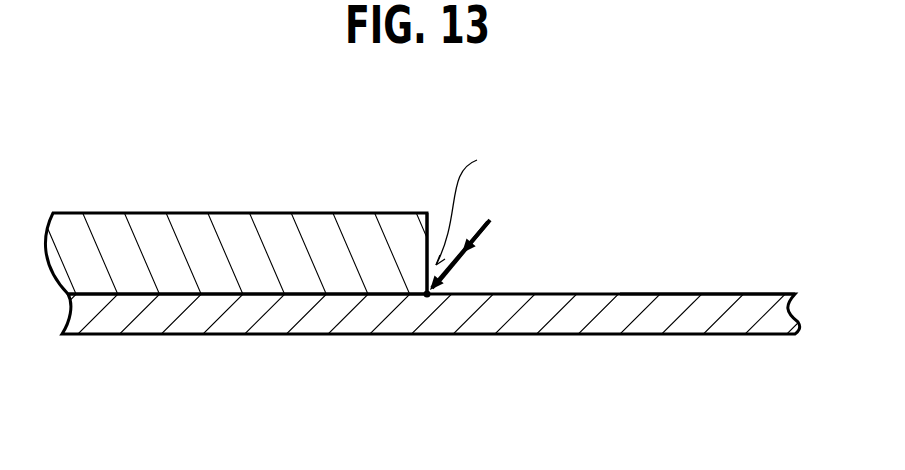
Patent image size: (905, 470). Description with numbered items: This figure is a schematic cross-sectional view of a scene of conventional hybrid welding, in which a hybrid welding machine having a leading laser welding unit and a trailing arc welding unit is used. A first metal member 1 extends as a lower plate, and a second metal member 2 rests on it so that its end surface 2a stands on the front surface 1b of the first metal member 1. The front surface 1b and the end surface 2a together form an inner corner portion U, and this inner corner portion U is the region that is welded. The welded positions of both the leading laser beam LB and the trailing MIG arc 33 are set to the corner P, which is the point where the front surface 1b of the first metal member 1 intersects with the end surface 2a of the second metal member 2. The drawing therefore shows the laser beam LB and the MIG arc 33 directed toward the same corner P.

The first metal member 1 is at (760, 302).
The front surface 1b is at (675, 294).
The second metal member 2 is at (240, 228).
The end surface 2a is at (428, 238).
The corner P is at (427, 297).
The MIG arc 33 is at (486, 234).
The laser beam LB is at (452, 268).
The inner corner portion U is at (467, 204).